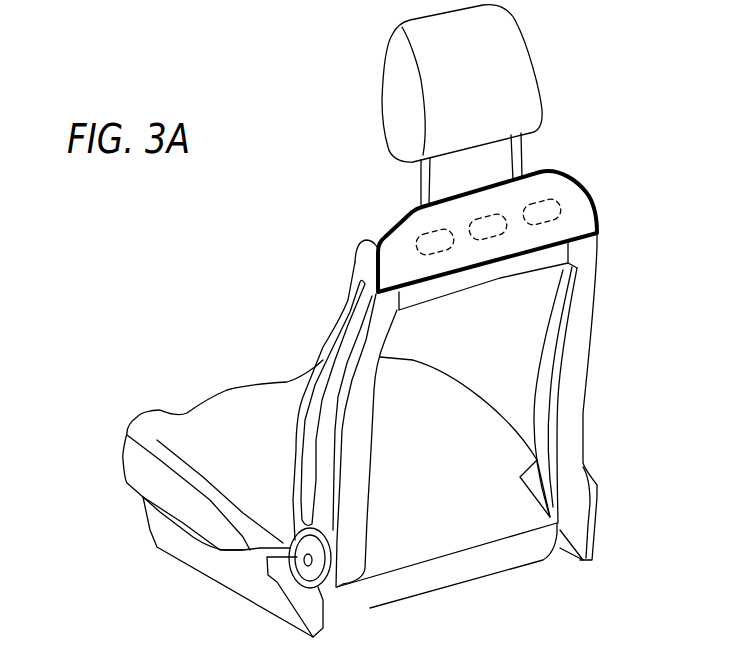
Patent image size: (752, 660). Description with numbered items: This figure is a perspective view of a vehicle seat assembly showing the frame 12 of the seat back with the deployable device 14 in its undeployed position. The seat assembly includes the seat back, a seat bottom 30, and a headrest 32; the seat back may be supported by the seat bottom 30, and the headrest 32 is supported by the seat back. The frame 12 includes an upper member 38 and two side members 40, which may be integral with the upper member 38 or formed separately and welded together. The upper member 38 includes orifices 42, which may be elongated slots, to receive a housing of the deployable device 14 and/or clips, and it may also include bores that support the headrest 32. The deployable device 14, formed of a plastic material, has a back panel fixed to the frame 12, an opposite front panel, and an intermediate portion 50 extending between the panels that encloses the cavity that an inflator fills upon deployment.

The frame 12 is at (302, 334).
The deployable device 14 is at (602, 175).
The seat bottom 30 is at (188, 427).
The headrest 32 is at (503, 49).
The upper member 38 is at (461, 278).
The side members 40 is at (357, 436).
The orifices 42 is at (443, 228).
The intermediate portion 50 is at (406, 212).